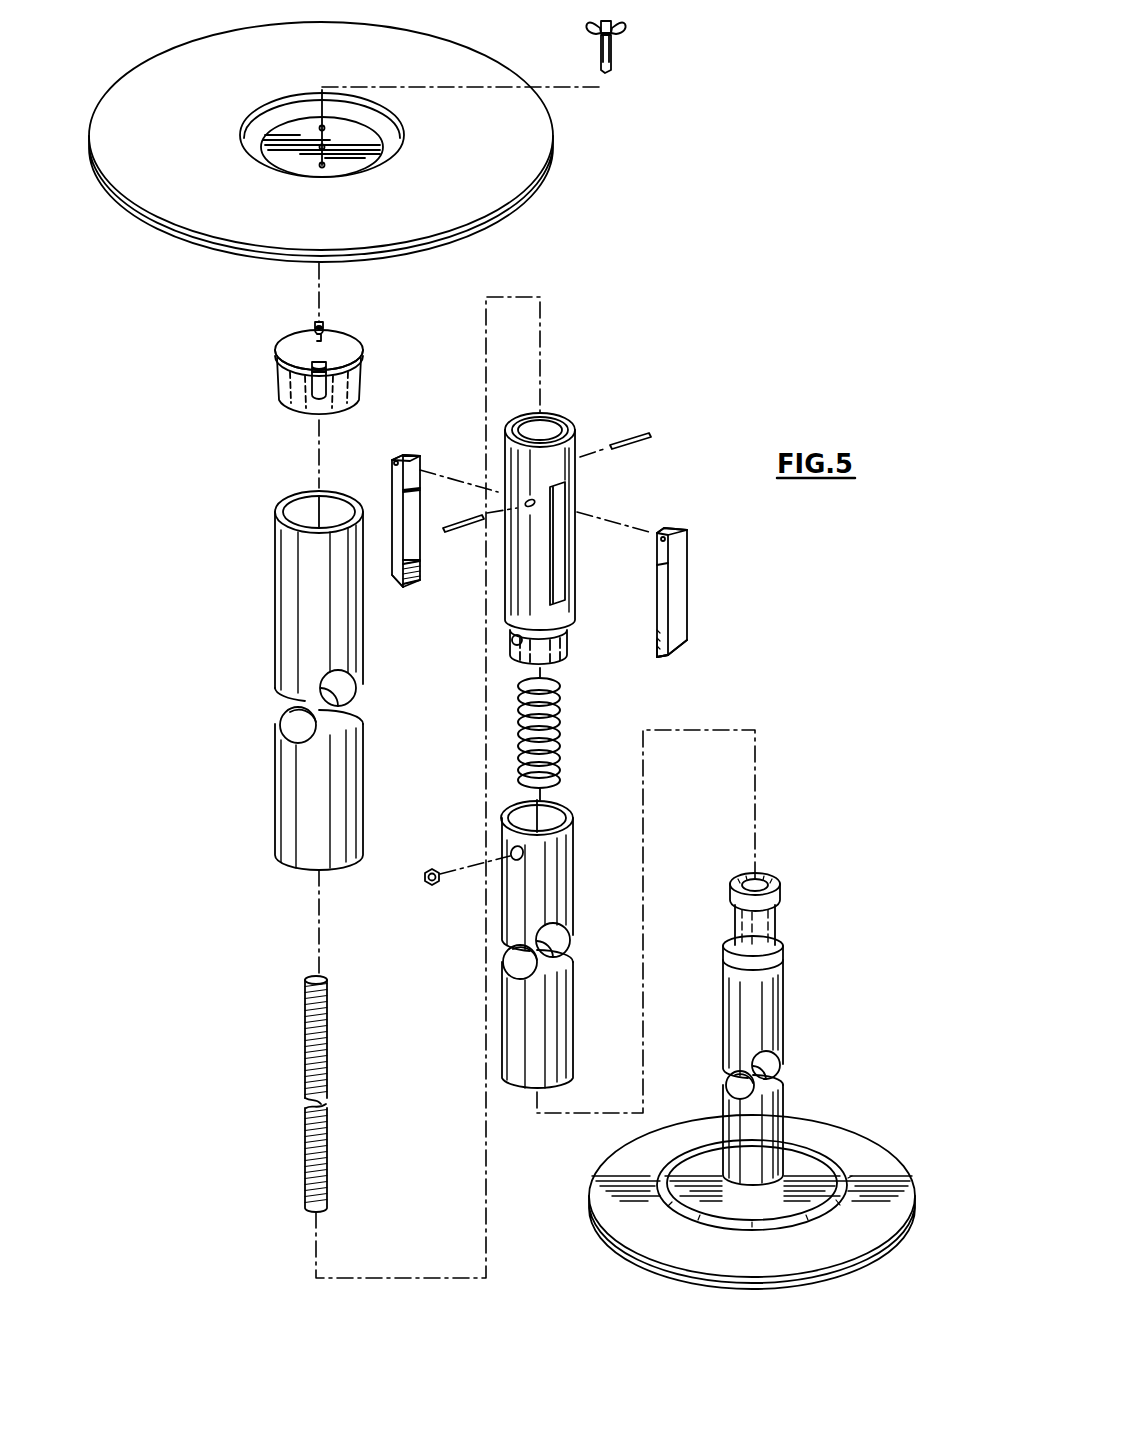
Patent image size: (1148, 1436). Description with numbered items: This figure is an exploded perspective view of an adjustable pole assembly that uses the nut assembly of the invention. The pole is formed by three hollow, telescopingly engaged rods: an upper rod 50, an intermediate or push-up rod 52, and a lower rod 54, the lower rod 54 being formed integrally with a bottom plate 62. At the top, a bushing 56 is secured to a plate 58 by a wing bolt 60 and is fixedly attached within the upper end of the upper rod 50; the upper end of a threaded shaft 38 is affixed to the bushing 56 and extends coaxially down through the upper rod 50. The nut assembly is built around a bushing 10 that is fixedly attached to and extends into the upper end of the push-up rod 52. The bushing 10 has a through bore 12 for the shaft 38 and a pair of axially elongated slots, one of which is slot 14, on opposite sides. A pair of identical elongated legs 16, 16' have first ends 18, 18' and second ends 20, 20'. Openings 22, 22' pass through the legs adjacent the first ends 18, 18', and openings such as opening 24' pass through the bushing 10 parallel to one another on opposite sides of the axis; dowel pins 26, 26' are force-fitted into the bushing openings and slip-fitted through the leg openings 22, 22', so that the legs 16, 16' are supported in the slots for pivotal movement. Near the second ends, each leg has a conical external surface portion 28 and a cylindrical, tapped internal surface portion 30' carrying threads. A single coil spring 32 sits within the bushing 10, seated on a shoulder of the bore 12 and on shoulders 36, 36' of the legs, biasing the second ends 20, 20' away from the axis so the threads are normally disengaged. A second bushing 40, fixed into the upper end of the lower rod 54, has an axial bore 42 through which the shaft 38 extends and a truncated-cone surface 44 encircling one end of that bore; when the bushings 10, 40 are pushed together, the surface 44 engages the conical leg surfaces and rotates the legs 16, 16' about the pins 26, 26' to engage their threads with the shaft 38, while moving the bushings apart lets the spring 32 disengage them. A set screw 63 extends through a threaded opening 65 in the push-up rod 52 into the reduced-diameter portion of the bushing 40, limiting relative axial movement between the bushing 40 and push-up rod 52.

The bushing 10 is at (568, 462).
The through bore 12 is at (545, 425).
The through slot 14 is at (565, 580).
The leg 16 is at (702, 592).
The leg 16' is at (379, 521).
The first end 18 is at (687, 508).
The first end 18' is at (417, 438).
The second end 20 is at (679, 672).
The second end 20' is at (402, 609).
The opening 22 is at (632, 552).
The opening 22' is at (368, 444).
The opening 24' is at (490, 541).
The dowel pin 26 is at (452, 537).
The dowel pin 26' is at (639, 417).
The external surface portion 28 is at (678, 650).
The internal surface portion 30' is at (438, 593).
The coil spring 32 is at (562, 726).
The shoulder 36 is at (634, 582).
The shoulder 36' is at (439, 499).
The shaft 38 is at (305, 1050).
The second bushing 40 is at (772, 925).
The axial bore 42 is at (747, 878).
The surface 44 is at (770, 878).
The upper rod 50 is at (291, 620).
The push-up rod 52 is at (565, 870).
The lower rod 54 is at (775, 1018).
The bushing 56 is at (340, 345).
The plate 58 is at (520, 172).
The wing bolt 60 is at (608, 50).
The bottom plate 62 is at (623, 1215).
The set screw 63 is at (435, 868).
The threaded opening 65 is at (508, 842).